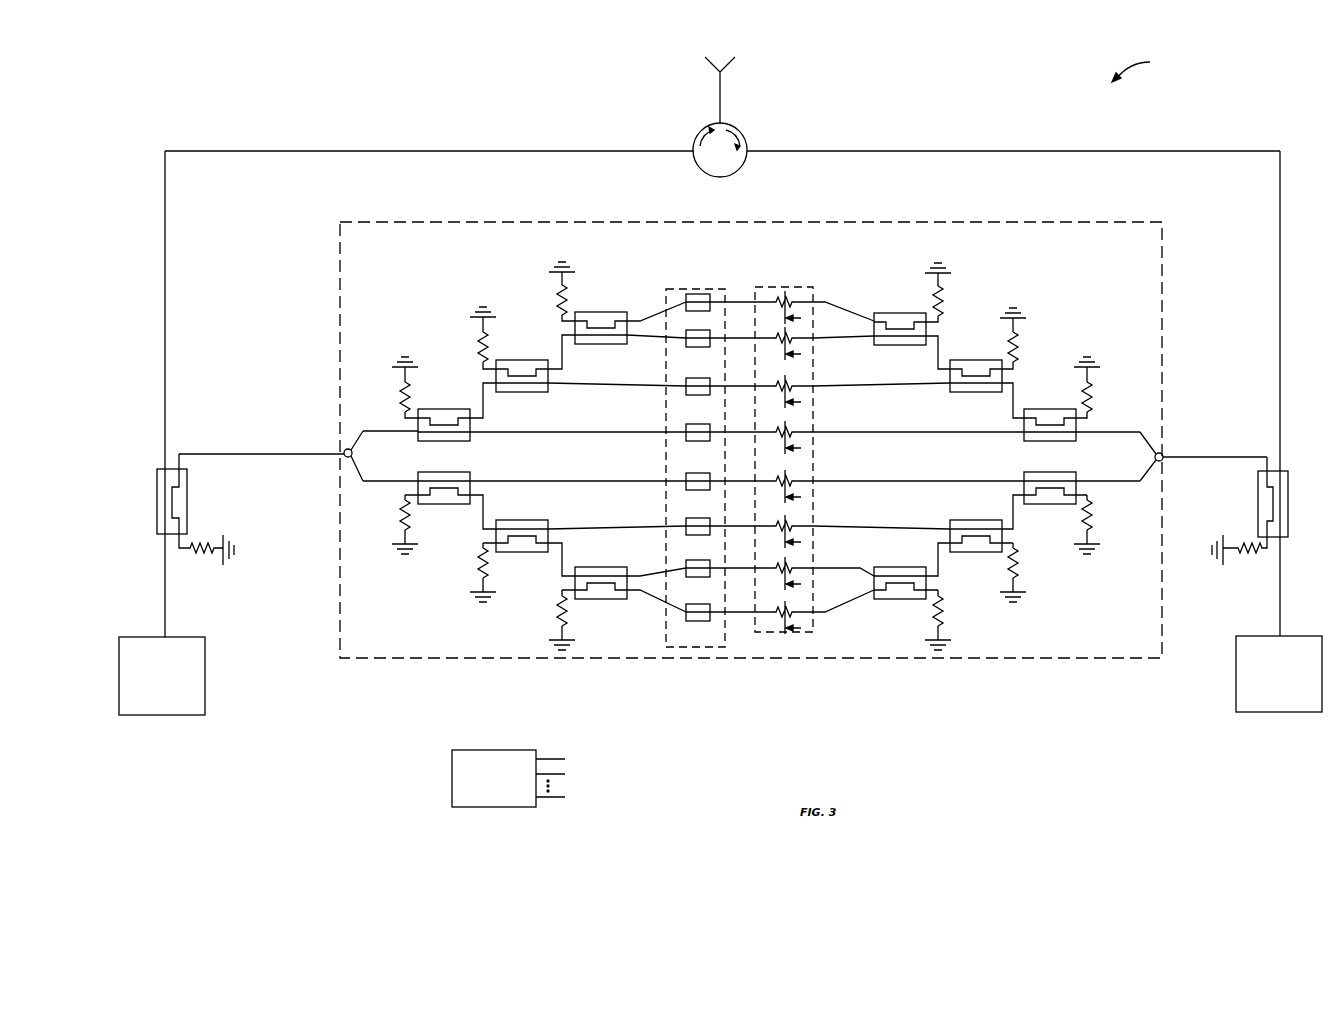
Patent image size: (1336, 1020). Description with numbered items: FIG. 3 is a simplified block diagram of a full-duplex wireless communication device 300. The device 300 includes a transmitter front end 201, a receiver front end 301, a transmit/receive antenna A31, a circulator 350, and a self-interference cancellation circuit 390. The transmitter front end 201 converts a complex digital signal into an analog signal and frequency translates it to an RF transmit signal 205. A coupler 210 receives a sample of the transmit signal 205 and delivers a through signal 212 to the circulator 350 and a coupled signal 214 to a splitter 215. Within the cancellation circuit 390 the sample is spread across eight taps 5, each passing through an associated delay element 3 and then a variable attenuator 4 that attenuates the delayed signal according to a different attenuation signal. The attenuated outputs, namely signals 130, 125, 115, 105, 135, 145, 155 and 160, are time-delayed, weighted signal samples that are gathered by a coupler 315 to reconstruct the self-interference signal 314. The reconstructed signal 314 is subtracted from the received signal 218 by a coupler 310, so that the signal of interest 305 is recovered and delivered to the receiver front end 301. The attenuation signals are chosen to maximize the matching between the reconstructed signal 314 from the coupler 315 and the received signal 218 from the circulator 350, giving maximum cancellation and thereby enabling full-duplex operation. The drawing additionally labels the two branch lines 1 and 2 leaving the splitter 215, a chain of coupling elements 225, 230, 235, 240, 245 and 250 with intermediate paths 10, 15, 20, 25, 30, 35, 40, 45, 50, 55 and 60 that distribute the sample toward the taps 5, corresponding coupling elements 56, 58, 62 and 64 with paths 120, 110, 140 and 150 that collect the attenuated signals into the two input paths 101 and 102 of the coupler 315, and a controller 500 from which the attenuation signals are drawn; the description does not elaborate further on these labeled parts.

The full-duplex wireless communication device 300 is at (1146, 70).
The circulator 350 is at (741, 130).
The transmit/receive antenna A31 is at (720, 82).
The through signal 212 is at (429, 138).
The received signal 218 is at (1013, 141).
The RF transmit signal 205 is at (178, 394).
The signal of interest 305 is at (1292, 393).
The transmitter front end 201 is at (205, 692).
The receiver front end 301 is at (1236, 684).
The coupler 210 is at (195, 509).
The coupler 310 is at (1264, 511).
The coupled signal 214 is at (261, 447).
The reconstructed self-interference signal 314 is at (1215, 449).
The splitter 215 is at (345, 450).
The coupler 315 is at (1162, 454).
The self-interference cancellation circuit 390 is at (1140, 262).
The splitter output line 1 is at (383, 431).
The splitter output line 2 is at (383, 481).
The directional coupler 225 is at (431, 399).
The directional coupler 230 is at (509, 349).
The directional coupler 235 is at (588, 303).
The directional coupler 240 is at (431, 513).
The directional coupler 245 is at (509, 561).
The directional coupler 250 is at (588, 608).
The tap 5 is at (612, 466).
The coupled signal line 10 is at (485, 400).
The signal path 15 is at (617, 378).
The coupled signal line 20 is at (563, 352).
The signal path 25 is at (656, 345).
The signal path 30 is at (656, 306).
The signal path 35 is at (578, 473).
The coupled signal line 40 is at (485, 512).
The signal path 45 is at (617, 519).
The coupled signal line 50 is at (564, 559).
The signal path 55 is at (656, 565).
The signal path / directional coupler 60 is at (863, 503).
The delay elements 3 is at (695, 458).
The variable attenuator 4 is at (778, 440).
The attenuated signal 130 is at (843, 304).
The attenuated signal 125 is at (843, 330).
The directional coupler 56 is at (912, 304).
The coupled signal line 120 is at (933, 352).
The directional coupler 58 is at (988, 350).
The attenuated signal 115 is at (881, 378).
The coupled signal line 110 is at (1006, 400).
The attenuated signal 105 is at (918, 424).
The combiner input line 101 is at (1108, 424).
The directional coupler 62 is at (1062, 513).
The attenuated signal 135 is at (918, 474).
The combiner input line 102 is at (1108, 489).
The coupled signal line 140 is at (1004, 512).
The directional coupler 64 is at (988, 561).
The attenuated signal 145 is at (881, 520).
The coupled signal line 150 is at (932, 559).
The attenuated signal 155 is at (843, 565).
The attenuated signal 160 is at (843, 601).
The controller 500 is at (507, 750).